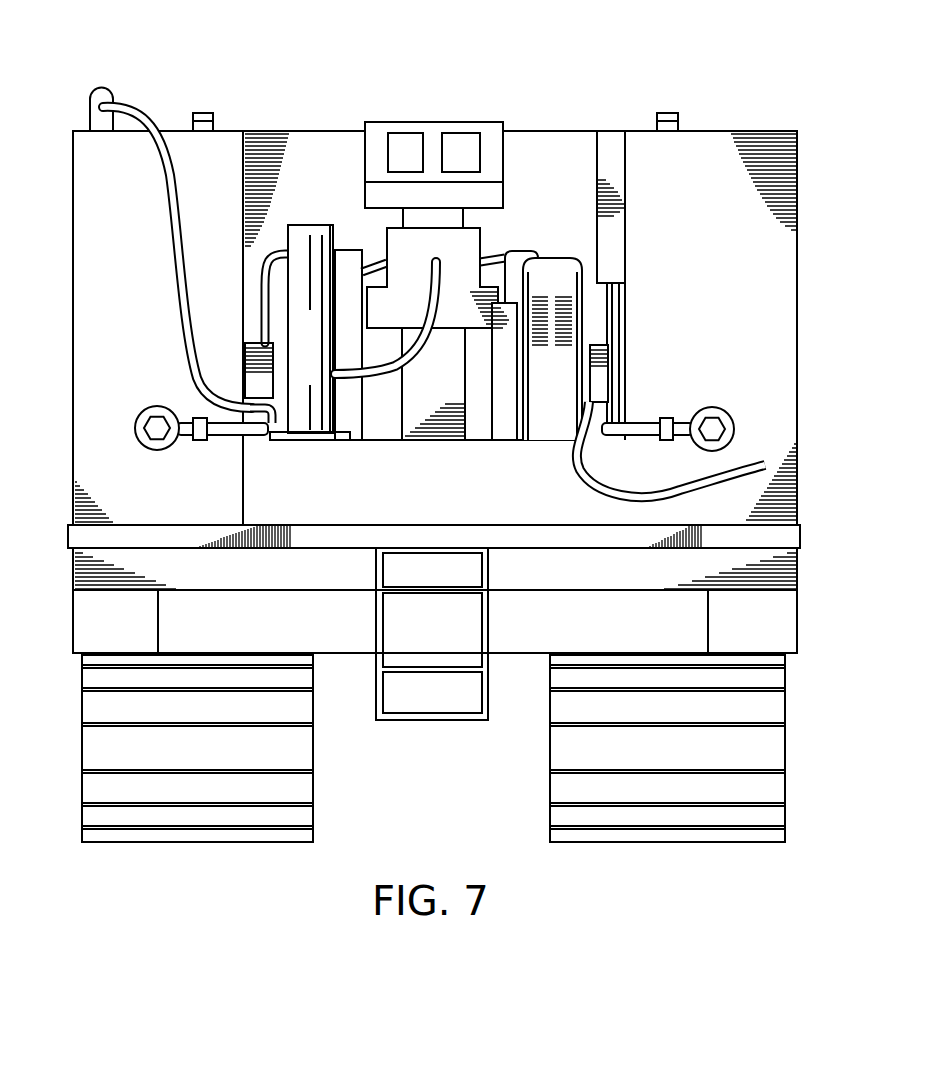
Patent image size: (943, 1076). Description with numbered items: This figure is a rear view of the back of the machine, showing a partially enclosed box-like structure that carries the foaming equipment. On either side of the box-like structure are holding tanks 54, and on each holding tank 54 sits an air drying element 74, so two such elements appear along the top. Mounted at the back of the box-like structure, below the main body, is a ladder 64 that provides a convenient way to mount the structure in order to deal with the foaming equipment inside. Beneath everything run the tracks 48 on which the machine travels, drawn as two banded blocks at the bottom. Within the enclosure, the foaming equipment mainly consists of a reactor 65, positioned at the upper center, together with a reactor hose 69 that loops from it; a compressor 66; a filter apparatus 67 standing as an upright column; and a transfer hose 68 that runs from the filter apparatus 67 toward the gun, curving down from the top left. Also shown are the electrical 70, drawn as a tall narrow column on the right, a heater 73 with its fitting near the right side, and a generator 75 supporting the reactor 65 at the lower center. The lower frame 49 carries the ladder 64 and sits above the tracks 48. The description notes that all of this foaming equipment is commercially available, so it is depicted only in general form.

The tracks 48 is at (300, 745).
The frame 49 is at (755, 545).
The holding tanks 54 is at (88, 170).
The ladder 64 is at (490, 612).
The reactor 65 is at (433, 121).
The compressor 66 is at (558, 372).
The filter apparatus 67 is at (305, 222).
The transfer hose 68 is at (152, 112).
The reactor hose 69 is at (498, 252).
The electrical 70 is at (614, 242).
The heater 73 is at (716, 420).
The air drying element 74 is at (203, 113).
The generator 75 is at (493, 420).